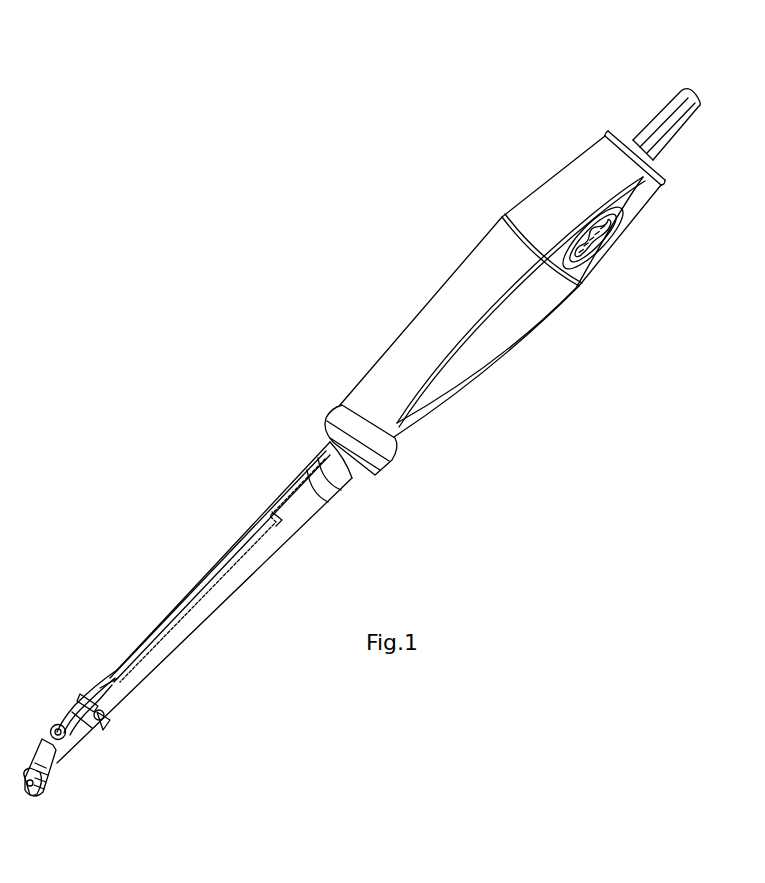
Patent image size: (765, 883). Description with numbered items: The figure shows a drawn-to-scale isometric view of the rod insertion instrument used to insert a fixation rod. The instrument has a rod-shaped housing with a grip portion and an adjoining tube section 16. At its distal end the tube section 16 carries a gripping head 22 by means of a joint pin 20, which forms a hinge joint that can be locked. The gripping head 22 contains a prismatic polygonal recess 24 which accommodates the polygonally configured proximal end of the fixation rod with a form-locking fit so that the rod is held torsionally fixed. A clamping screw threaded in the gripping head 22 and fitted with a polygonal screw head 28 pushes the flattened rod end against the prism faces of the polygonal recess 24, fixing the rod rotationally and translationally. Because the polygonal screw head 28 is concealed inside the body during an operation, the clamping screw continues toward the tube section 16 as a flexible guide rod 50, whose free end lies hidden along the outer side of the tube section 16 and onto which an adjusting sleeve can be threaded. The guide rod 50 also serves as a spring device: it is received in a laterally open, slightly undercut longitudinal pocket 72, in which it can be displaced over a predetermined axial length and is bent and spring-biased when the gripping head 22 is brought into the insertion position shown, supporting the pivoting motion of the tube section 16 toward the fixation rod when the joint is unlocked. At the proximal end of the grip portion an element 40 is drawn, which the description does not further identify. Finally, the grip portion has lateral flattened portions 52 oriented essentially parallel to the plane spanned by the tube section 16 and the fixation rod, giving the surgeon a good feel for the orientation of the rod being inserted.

The tube section 16 is at (222, 592).
The joint pin 20 is at (103, 721).
The gripping head 22 is at (58, 753).
The prismatic polygonal recess 24 is at (25, 789).
The polygonal screw head 28 is at (51, 726).
The actuation knob 40 is at (673, 107).
The flexible guide rod 50 is at (78, 696).
The lateral flattened portions 52 is at (445, 388).
The longitudinal pocket 72 is at (182, 620).